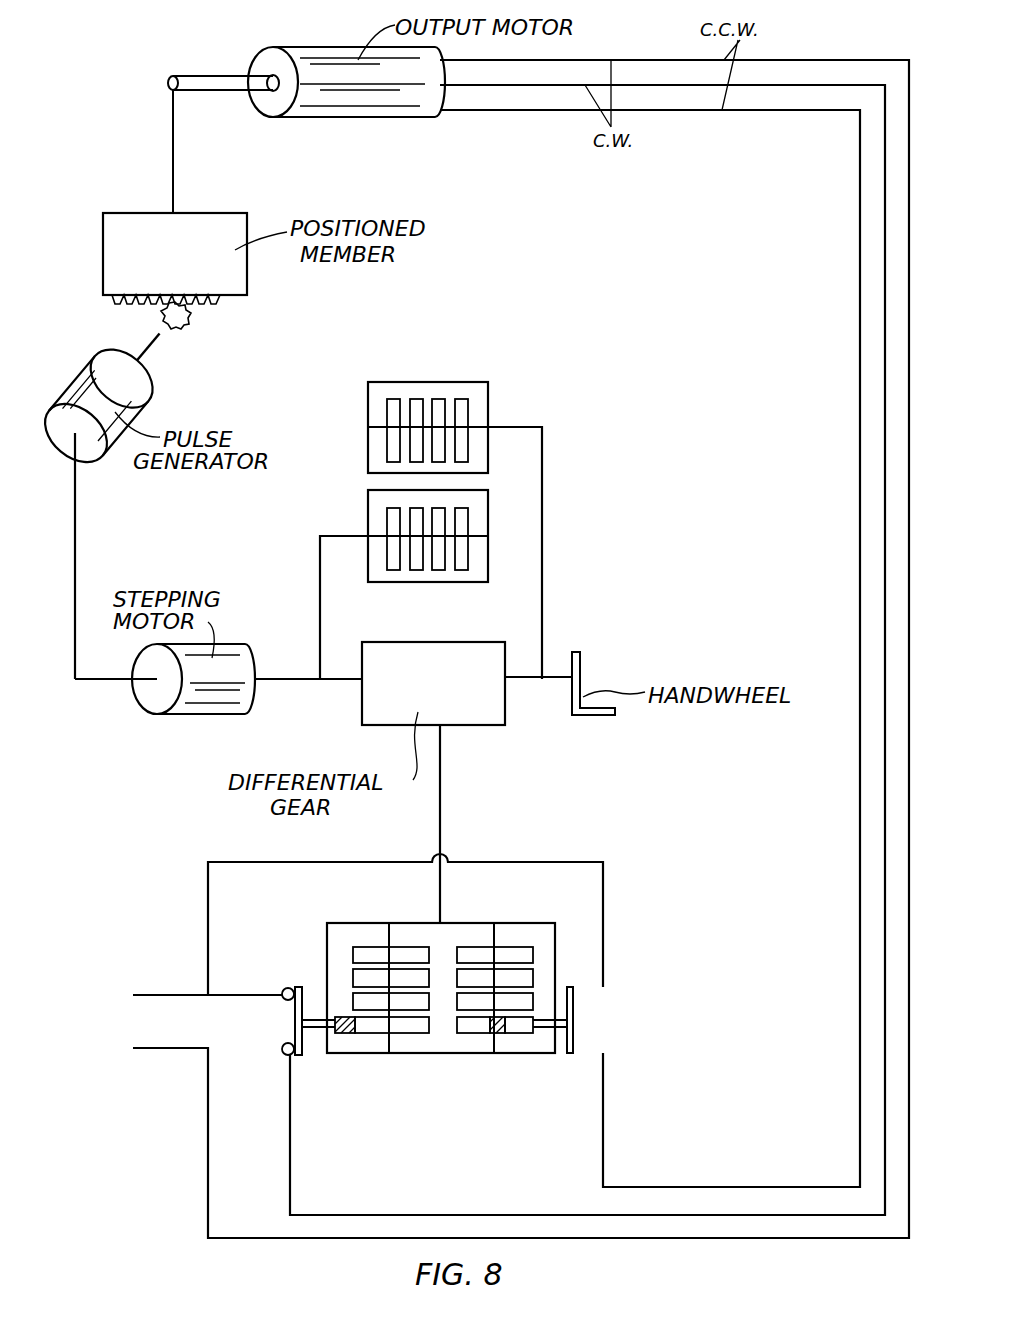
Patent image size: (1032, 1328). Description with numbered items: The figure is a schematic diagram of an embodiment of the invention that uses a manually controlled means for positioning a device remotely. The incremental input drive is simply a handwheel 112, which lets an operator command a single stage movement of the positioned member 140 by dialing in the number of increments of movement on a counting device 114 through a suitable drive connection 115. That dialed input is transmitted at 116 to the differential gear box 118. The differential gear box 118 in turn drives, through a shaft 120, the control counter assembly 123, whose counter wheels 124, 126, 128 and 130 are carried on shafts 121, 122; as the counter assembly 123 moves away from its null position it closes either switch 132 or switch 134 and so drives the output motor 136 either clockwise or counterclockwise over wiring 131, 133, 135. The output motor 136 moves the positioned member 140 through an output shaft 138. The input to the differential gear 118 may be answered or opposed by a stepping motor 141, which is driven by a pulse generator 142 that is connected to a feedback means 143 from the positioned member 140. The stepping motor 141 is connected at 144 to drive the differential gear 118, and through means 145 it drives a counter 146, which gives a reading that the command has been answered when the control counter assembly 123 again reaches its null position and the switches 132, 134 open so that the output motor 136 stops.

The handwheel 112 is at (582, 675).
The counting device 114 is at (488, 395).
The drive connection 115 is at (542, 540).
The input transmission 116 is at (558, 682).
The differential gear box 118 is at (433, 683).
The output shaft 120 is at (441, 786).
The shaft 121 is at (389, 940).
The shaft 122 is at (497, 935).
The counter assembly 123 is at (461, 996).
The wheel 124 is at (533, 951).
The wheel 126 is at (533, 974).
The wheel 128 is at (533, 1000).
The wheel contact 130 is at (518, 1034).
The wire 131 is at (735, 1236).
The switch 132 is at (295, 1023).
The wire 133 is at (418, 1215).
The switch 134 is at (573, 1024).
The wire 135 is at (860, 1130).
The output motor 136 is at (381, 118).
The output shaft 138 is at (235, 93).
The positioned member 140 is at (175, 258).
The stepping motor 141 is at (218, 715).
The pulse generator 142 is at (148, 377).
The feedback means 143 is at (190, 314).
The stepping motor connection 144 is at (305, 681).
The counter drive means 145 is at (318, 580).
The counter 146 is at (368, 517).